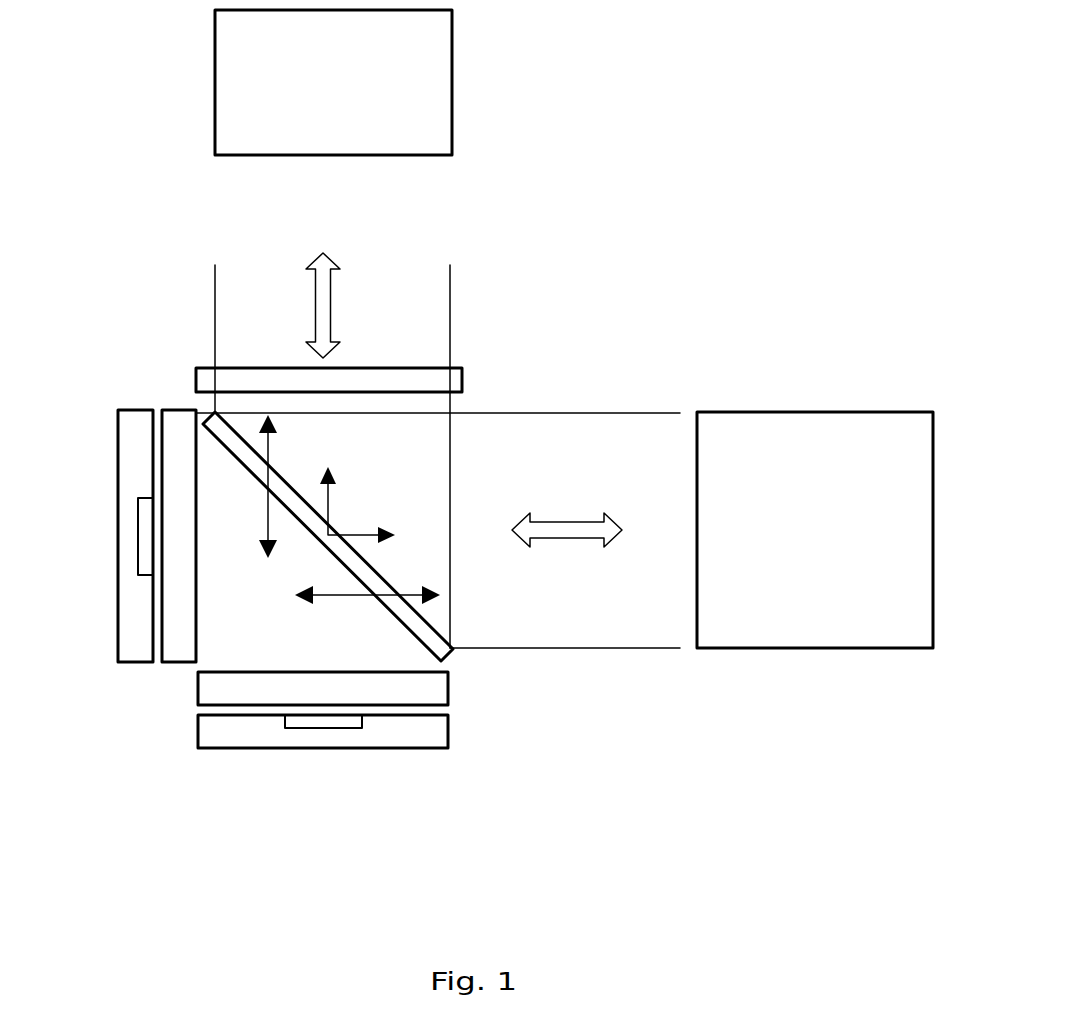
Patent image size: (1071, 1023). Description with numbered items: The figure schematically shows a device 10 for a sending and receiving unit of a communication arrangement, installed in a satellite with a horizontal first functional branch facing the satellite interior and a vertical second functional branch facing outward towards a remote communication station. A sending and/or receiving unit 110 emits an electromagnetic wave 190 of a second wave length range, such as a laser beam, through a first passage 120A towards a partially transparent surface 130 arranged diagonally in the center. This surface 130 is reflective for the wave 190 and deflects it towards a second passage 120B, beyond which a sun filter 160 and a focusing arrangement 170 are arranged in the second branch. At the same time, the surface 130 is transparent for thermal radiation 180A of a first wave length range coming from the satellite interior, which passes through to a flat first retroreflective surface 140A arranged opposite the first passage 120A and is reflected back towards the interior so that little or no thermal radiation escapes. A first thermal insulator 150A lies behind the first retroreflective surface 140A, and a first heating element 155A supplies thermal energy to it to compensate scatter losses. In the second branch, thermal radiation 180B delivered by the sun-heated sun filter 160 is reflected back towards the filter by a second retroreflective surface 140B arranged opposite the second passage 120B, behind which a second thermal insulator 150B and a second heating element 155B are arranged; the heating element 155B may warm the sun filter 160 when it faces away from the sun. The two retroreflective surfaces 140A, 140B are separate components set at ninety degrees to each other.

The device 10 is at (716, 105).
The sending and/or receiving unit 110 is at (753, 410).
The first passage 120A is at (458, 493).
The second passage 120B is at (389, 426).
The partially transparent surface 130 is at (390, 580).
The first retroreflective surface 140A is at (180, 653).
The second retroreflective surface 140B is at (437, 690).
The first thermal insulator 150A is at (137, 648).
The second thermal insulator 150B is at (387, 738).
The first heating element 155A is at (145, 522).
The second heating element 155B is at (313, 728).
The sun filter 160 is at (206, 376).
The focusing arrangement 170 is at (452, 75).
The thermal radiation of the first wave length range 180A is at (357, 598).
The thermal radiation of the first wave length range 180B is at (268, 496).
The electromagnetic wave of the second wave length range 190 is at (331, 290).